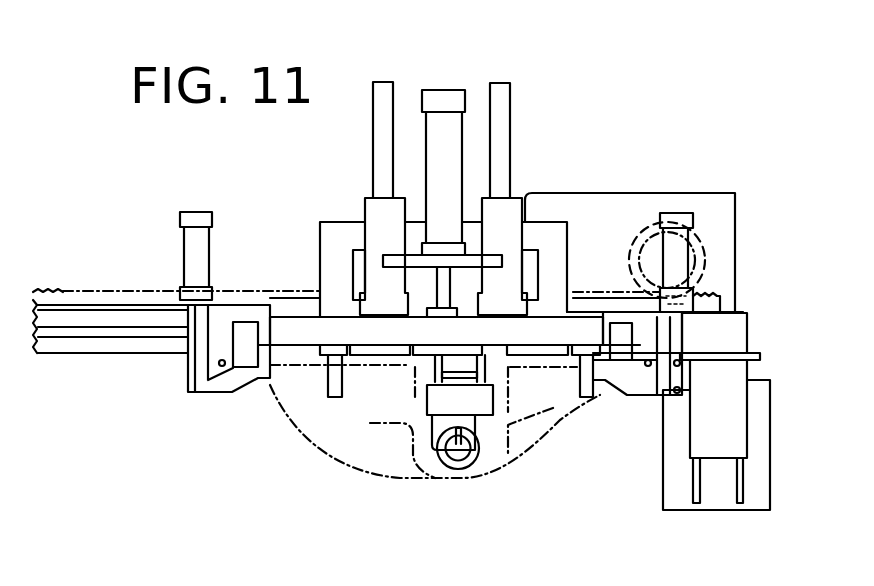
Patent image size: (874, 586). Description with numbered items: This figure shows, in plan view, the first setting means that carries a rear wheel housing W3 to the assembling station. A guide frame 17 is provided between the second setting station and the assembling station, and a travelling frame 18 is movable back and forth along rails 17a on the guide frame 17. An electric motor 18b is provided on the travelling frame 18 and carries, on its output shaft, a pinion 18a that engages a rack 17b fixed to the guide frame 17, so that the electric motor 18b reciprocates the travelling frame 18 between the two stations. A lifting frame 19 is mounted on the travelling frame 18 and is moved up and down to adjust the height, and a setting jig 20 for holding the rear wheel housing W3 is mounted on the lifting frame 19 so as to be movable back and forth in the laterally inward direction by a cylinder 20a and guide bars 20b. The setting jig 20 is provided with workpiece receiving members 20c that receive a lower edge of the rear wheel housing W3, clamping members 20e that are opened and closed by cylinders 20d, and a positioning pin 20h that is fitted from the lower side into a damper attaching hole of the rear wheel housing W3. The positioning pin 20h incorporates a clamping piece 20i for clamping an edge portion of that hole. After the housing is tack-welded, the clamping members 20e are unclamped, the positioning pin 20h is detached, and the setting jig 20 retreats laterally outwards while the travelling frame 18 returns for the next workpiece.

The guide frame 17 is at (73, 345).
The rails 17a is at (141, 330).
The rack 17b is at (70, 288).
The travelling frame 18 is at (548, 233).
The pinion 18a is at (700, 275).
The electric motor 18b is at (700, 235).
The lifting frame 19 is at (358, 263).
The setting jig 20 is at (340, 330).
The cylinder 20a is at (442, 122).
The guide bars 20b is at (383, 122).
The workpiece receiving members 20c is at (335, 393).
The cylinders 20d is at (193, 232).
The clamping members 20e is at (258, 378).
The positioning pin 20h is at (457, 463).
The clamping piece 20i is at (470, 440).
The rear wheel housing W3 is at (357, 480).